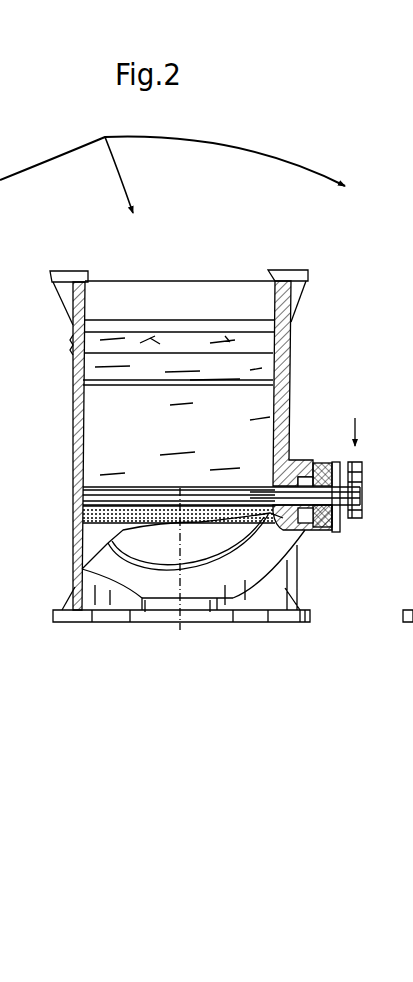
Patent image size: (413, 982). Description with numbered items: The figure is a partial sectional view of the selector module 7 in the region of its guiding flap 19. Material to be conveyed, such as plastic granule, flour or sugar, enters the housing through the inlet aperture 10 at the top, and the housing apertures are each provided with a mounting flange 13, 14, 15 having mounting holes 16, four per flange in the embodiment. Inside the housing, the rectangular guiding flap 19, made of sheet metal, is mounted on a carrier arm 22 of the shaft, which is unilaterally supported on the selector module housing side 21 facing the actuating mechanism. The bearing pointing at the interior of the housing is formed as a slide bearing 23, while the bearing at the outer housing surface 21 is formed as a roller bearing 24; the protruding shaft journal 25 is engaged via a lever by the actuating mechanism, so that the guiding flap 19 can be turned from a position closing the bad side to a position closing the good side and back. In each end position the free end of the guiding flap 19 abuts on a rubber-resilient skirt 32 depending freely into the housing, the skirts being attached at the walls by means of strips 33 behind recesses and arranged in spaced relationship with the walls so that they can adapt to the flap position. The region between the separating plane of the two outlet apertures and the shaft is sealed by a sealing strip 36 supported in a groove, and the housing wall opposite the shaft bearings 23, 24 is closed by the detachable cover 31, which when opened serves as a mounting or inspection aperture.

The selector module 7 is at (172, 162).
The inlet aperture 10 is at (175, 298).
The mounting flange 13 is at (70, 272).
The mounting flange 14 is at (125, 580).
The mounting flange 15 is at (238, 618).
The mounting holes 16 is at (407, 668).
The guiding flap 19 is at (100, 420).
The selector module housing side 21 is at (291, 392).
The carrier arm 22 is at (127, 498).
The slide bearing 23 is at (295, 467).
The roller bearing 24 is at (330, 532).
The shaft journal 25 is at (340, 532).
The cover 31 is at (73, 437).
The rubber-resilient skirt 32 is at (73, 364).
The strips 33 is at (291, 334).
The sealing strip 36 is at (190, 518).